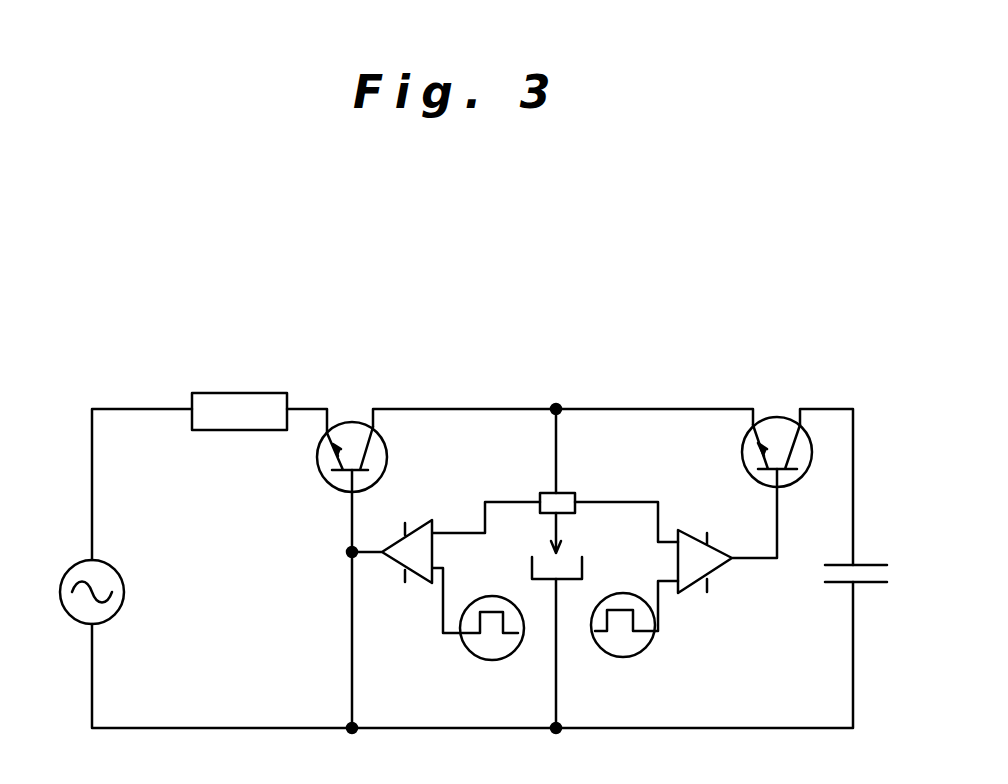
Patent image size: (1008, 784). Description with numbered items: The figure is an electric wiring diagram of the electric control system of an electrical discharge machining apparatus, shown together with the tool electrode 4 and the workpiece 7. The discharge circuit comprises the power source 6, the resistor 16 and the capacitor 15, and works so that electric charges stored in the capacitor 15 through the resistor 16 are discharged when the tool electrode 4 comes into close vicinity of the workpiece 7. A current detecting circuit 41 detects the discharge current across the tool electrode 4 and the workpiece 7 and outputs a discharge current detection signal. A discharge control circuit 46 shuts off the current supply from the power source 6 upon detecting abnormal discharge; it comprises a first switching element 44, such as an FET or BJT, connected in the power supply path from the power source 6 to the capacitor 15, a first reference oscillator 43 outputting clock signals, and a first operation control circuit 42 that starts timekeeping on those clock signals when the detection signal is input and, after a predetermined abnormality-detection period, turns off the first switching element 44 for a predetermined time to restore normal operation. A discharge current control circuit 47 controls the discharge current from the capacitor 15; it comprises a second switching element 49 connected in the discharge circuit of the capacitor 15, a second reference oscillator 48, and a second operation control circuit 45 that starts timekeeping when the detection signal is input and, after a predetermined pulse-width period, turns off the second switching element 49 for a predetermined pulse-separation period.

The resistor 16 is at (231, 397).
The power source 6 is at (124, 568).
The first switching element 44 is at (313, 463).
The first operation control circuit 42 is at (418, 518).
The first reference oscillator 43 is at (470, 652).
The discharge control circuit 46 is at (446, 582).
The current detecting circuit 41 is at (558, 492).
The tool electrode 4 is at (558, 537).
The workpiece 7 is at (547, 580).
The second reference oscillator 48 is at (630, 657).
The second operation control circuit 45 is at (717, 573).
The discharge current control circuit 47 is at (711, 599).
The second switching element 49 is at (742, 462).
The capacitor 15 is at (875, 562).